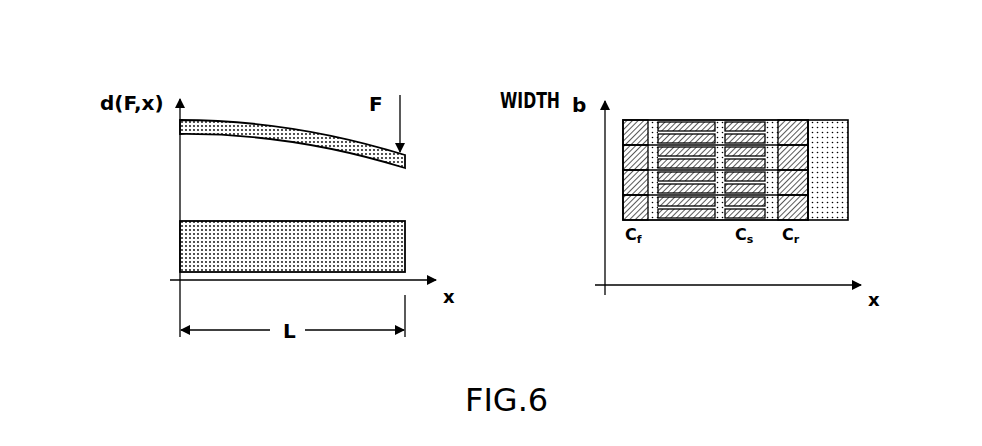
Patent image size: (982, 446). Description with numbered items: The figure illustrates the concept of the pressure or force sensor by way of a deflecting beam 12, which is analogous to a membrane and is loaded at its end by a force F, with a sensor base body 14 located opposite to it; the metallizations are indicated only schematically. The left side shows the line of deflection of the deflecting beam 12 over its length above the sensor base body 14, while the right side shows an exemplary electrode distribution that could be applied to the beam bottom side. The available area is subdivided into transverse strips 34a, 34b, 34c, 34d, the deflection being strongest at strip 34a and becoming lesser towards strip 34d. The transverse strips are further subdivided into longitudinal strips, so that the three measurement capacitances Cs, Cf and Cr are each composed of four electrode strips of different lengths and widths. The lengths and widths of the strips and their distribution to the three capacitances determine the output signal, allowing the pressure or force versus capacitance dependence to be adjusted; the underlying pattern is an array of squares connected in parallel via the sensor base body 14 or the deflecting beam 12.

The deflecting beam 12 is at (406, 162).
The sensor base body 14 is at (406, 253).
The transverse strip 34a is at (636, 118).
The transverse strip 34b is at (679, 221).
The transverse strip 34c is at (746, 118).
The transverse strip 34d is at (806, 221).